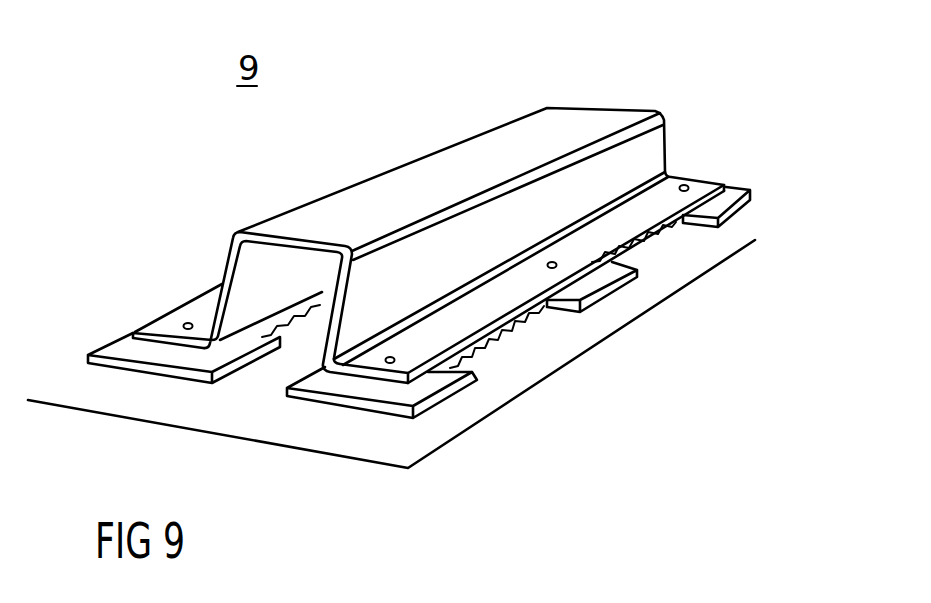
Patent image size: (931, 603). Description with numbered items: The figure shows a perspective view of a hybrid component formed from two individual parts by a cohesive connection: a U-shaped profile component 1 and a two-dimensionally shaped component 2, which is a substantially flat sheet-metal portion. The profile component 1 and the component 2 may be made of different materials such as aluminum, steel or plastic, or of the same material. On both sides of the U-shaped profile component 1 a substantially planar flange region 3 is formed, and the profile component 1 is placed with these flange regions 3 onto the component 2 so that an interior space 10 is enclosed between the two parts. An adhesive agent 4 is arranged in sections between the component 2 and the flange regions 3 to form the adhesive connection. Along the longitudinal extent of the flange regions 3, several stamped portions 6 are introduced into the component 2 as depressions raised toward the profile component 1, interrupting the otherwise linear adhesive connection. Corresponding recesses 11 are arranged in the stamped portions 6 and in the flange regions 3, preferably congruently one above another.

The U-shaped profile component 1 is at (534, 133).
The two-dimensionally shaped component 2 is at (133, 412).
The flange region 3 is at (623, 232).
The adhesive agent 4 is at (497, 337).
The stamped portion 6 is at (117, 347).
The interior space 10 is at (270, 313).
The recess 11 is at (182, 325).